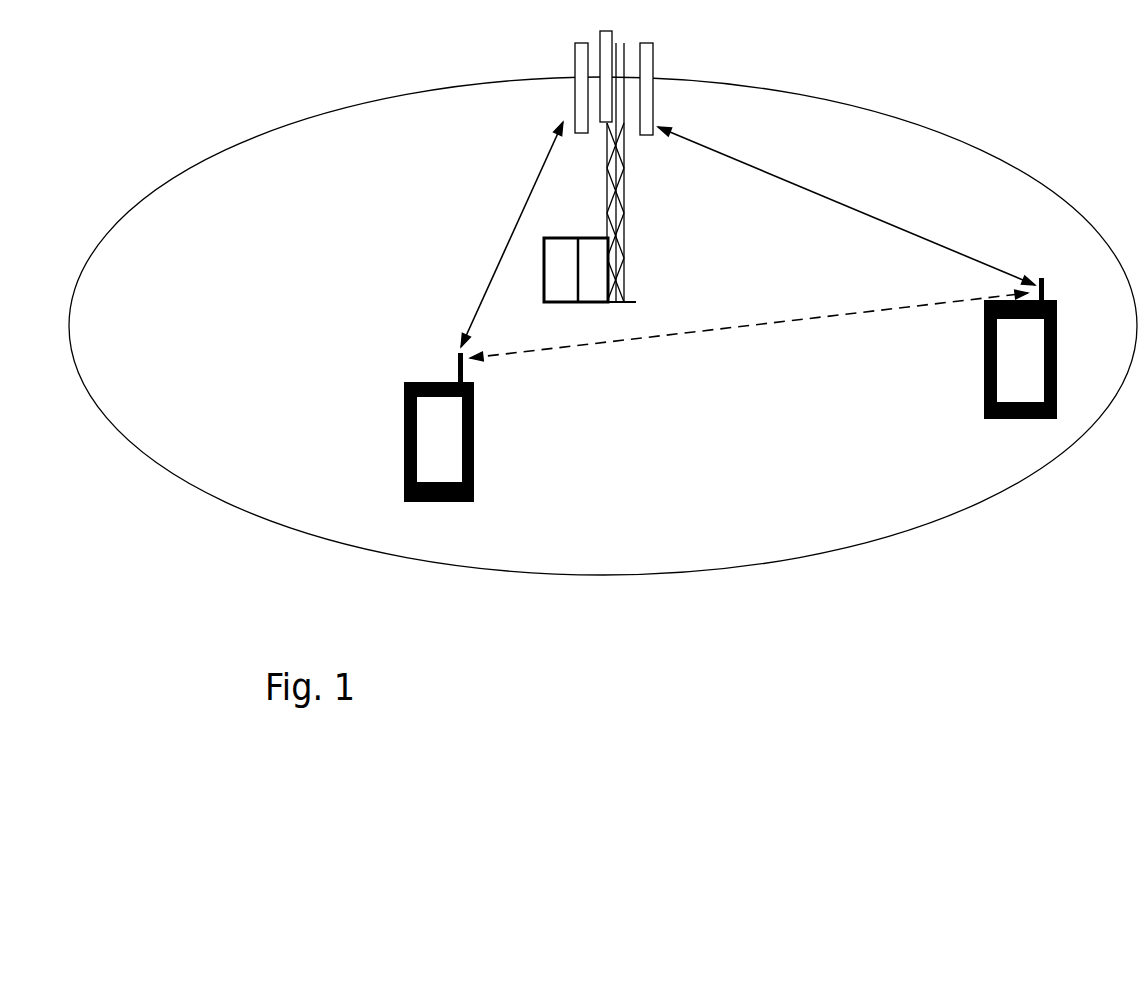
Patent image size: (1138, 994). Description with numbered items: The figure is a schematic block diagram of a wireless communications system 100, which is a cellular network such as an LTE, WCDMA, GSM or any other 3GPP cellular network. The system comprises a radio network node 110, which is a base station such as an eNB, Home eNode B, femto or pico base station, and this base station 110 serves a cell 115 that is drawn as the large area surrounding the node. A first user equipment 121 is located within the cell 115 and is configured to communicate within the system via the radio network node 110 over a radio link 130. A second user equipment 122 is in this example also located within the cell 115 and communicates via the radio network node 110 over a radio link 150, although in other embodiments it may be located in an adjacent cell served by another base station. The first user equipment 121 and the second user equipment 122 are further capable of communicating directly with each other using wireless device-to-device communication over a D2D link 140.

The wireless communications system 100 is at (942, 613).
The radio network node 110 is at (618, 258).
The cell 115 is at (205, 492).
The first user equipment 121 is at (404, 402).
The second user equipment 122 is at (984, 407).
The radio link 130 is at (477, 312).
The D2D link 140 is at (671, 338).
The radio link 150 is at (860, 210).